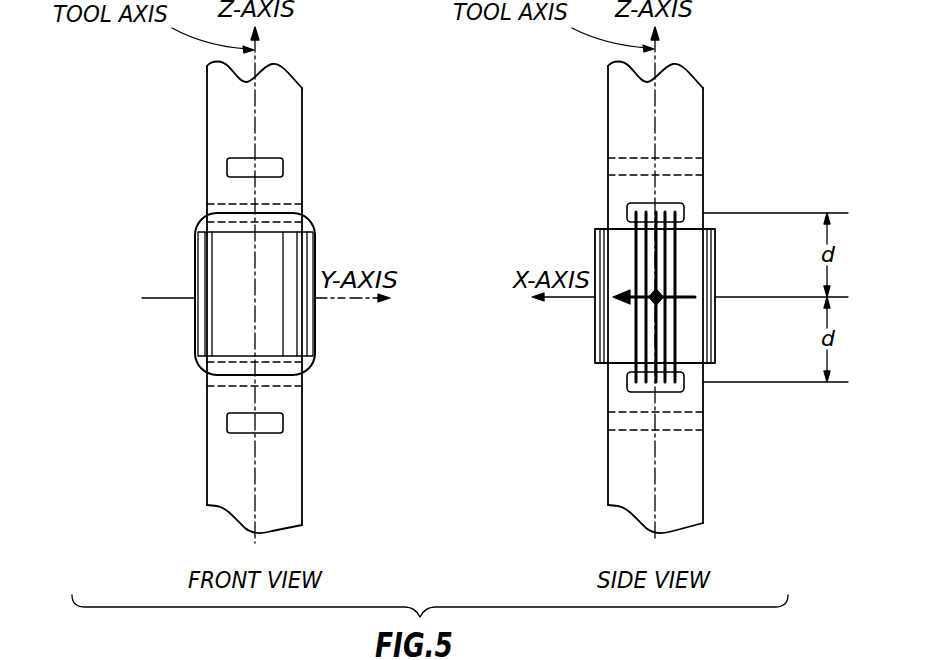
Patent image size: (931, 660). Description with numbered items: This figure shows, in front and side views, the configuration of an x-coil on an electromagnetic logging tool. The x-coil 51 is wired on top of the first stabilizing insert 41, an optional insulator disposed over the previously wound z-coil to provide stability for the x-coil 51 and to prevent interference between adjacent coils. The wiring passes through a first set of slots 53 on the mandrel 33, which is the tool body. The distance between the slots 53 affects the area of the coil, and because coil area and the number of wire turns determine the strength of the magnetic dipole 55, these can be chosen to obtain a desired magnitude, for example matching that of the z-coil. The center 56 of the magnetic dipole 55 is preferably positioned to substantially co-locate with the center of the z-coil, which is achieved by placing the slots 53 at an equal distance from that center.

The mandrel 33 is at (302, 481).
The stabilizing insert 41 is at (307, 231).
The x-coil 51 is at (315, 322).
The slots 53 is at (302, 207).
The magnetic dipole 55 is at (688, 293).
The center of the magnetic dipole 56 is at (660, 302).